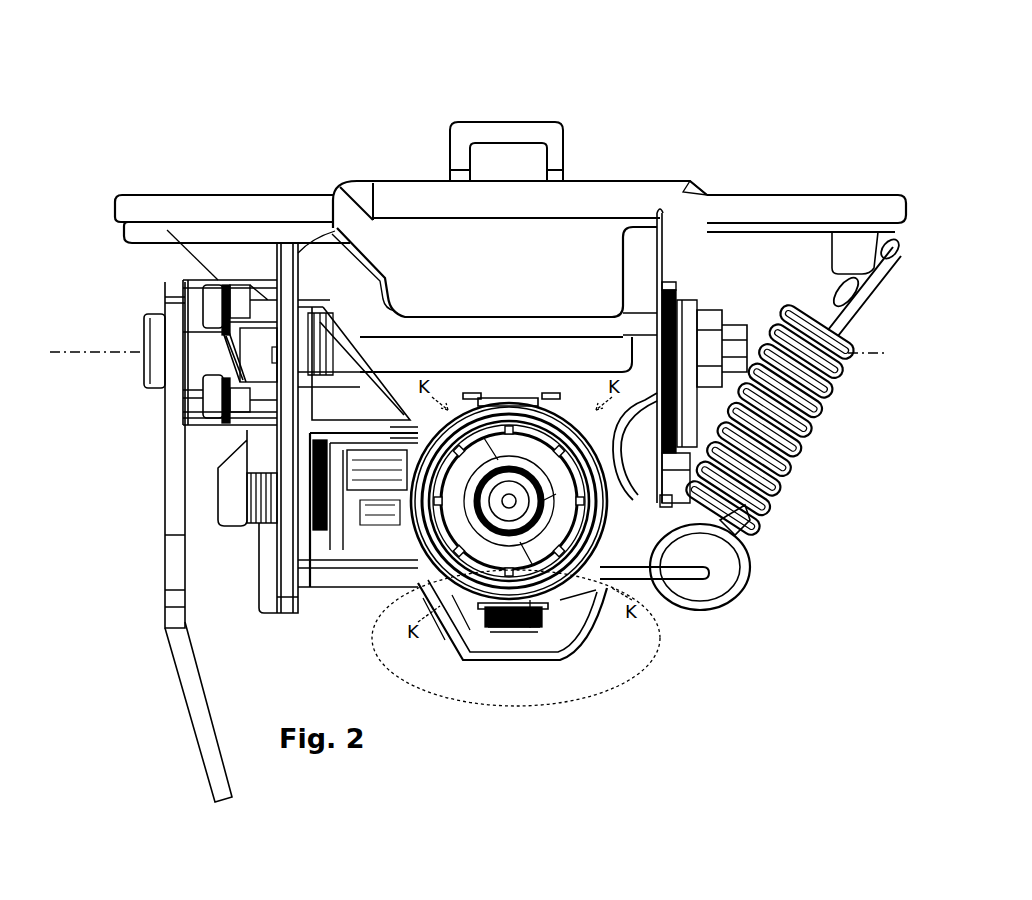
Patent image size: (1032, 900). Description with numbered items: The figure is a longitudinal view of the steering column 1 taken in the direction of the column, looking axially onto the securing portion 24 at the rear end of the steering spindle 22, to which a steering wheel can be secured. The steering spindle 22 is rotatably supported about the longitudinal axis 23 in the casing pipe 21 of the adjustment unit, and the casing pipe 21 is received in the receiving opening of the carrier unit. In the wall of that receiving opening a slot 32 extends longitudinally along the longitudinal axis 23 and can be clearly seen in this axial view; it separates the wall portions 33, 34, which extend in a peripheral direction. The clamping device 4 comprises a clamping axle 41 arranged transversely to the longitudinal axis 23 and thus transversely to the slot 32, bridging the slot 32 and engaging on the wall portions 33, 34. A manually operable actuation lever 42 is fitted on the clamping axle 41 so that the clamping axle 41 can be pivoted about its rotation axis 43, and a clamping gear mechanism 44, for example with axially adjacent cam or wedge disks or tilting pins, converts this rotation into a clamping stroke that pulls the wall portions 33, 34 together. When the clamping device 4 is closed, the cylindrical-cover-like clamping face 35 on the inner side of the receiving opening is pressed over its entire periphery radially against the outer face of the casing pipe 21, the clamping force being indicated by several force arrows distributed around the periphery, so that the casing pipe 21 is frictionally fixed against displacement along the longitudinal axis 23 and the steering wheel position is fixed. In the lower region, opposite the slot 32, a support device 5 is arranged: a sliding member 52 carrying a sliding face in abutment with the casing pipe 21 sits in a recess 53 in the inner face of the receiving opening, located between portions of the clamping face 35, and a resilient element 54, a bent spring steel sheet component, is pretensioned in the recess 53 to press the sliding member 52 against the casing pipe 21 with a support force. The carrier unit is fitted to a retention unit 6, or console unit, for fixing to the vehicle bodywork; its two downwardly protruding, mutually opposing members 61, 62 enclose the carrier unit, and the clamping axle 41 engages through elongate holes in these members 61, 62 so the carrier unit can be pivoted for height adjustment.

The steering column 1 is at (530, 100).
The clamping device 4 is at (106, 305).
The support device 5 is at (500, 638).
The retention unit 6 is at (395, 200).
The casing pipe 21 is at (730, 587).
The steering spindle 22 is at (637, 543).
The longitudinal axis 23 is at (615, 520).
The securing portion 24 is at (620, 497).
The slot 32 is at (522, 375).
The wall portion 33 is at (600, 463).
The wall portion 34 is at (365, 433).
The clamping face 35 is at (440, 622).
The clamping axle 41 is at (428, 355).
The actuation lever 42 is at (178, 487).
The rotation axis 43 is at (50, 352).
The clamping gear mechanism 44 is at (213, 305).
The sliding member 52 is at (590, 600).
The recess 53 is at (535, 630).
The resilient element 54 is at (515, 640).
The member 61 is at (287, 580).
The member 62 is at (668, 427).